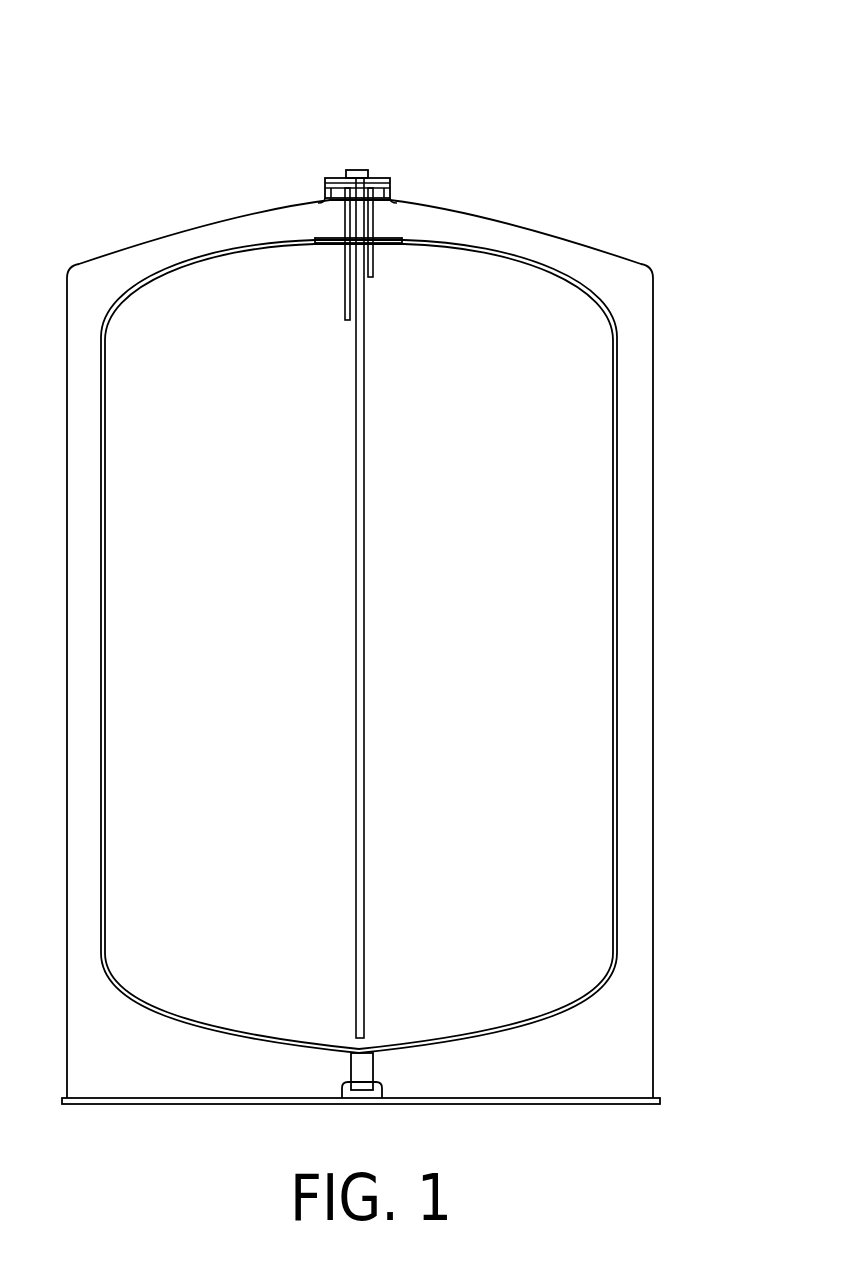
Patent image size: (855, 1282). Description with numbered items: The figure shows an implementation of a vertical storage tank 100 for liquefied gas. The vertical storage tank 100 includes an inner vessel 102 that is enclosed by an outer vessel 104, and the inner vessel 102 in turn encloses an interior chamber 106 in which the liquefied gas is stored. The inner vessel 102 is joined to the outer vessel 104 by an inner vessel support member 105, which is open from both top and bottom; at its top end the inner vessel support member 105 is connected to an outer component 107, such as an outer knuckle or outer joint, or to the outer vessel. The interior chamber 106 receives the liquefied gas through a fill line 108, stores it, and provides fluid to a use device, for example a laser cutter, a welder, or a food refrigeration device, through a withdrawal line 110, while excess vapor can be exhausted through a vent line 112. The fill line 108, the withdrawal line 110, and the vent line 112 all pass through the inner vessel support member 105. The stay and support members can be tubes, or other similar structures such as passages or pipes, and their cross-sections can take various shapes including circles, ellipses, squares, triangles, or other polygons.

The vertical storage tank 100 is at (94, 91).
The inner vessel 102 is at (614, 324).
The outer vessel 104 is at (646, 405).
The inner vessel support member 105 is at (374, 220).
The interior chamber 106 is at (582, 637).
The outer component 107 is at (327, 179).
The fill line 108 is at (351, 314).
The withdrawal line 110 is at (366, 350).
The vent line 112 is at (374, 260).